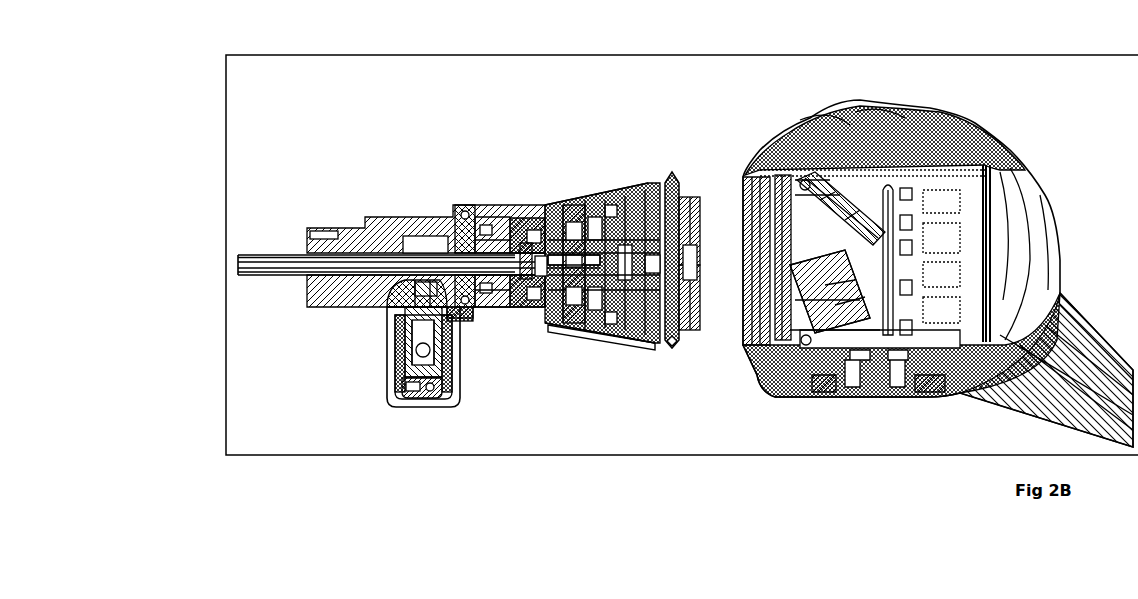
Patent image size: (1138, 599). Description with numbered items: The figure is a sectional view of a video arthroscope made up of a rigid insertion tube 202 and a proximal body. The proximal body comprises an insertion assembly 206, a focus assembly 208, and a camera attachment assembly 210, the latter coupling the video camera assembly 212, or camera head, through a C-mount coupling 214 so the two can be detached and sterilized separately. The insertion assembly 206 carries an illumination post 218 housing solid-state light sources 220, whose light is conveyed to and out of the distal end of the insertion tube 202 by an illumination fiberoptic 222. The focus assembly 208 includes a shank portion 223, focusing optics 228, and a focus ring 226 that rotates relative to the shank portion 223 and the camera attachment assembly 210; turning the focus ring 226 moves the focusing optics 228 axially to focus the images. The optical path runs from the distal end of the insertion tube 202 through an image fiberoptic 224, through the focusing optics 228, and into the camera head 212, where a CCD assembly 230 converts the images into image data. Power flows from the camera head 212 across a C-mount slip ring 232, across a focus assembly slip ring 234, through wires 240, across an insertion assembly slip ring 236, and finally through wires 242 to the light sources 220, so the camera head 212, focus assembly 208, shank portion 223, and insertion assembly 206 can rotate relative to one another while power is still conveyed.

The rigid insertion tube 202 is at (240, 255).
The insertion assembly 206 is at (388, 216).
The focus assembly 208 is at (514, 205).
The camera attachment assembly 210 is at (673, 175).
The video camera assembly 212 is at (983, 150).
The C-mount coupling 214 is at (697, 332).
The illumination post 218 is at (462, 373).
The solid-state light sources 220 is at (397, 383).
The illumination fiberoptic 222 is at (382, 310).
The shank portion 223 is at (526, 207).
The image fiberoptic 224 is at (300, 268).
The focus ring 226 is at (618, 187).
The focusing optics 228 is at (583, 333).
The CCD assembly 230 is at (868, 335).
The C-mount slip ring 232 is at (700, 213).
The focus assembly slip ring 234 is at (575, 202).
The insertion assembly slip ring 236 is at (466, 207).
The wires 240 is at (498, 204).
The wires 242 is at (465, 322).